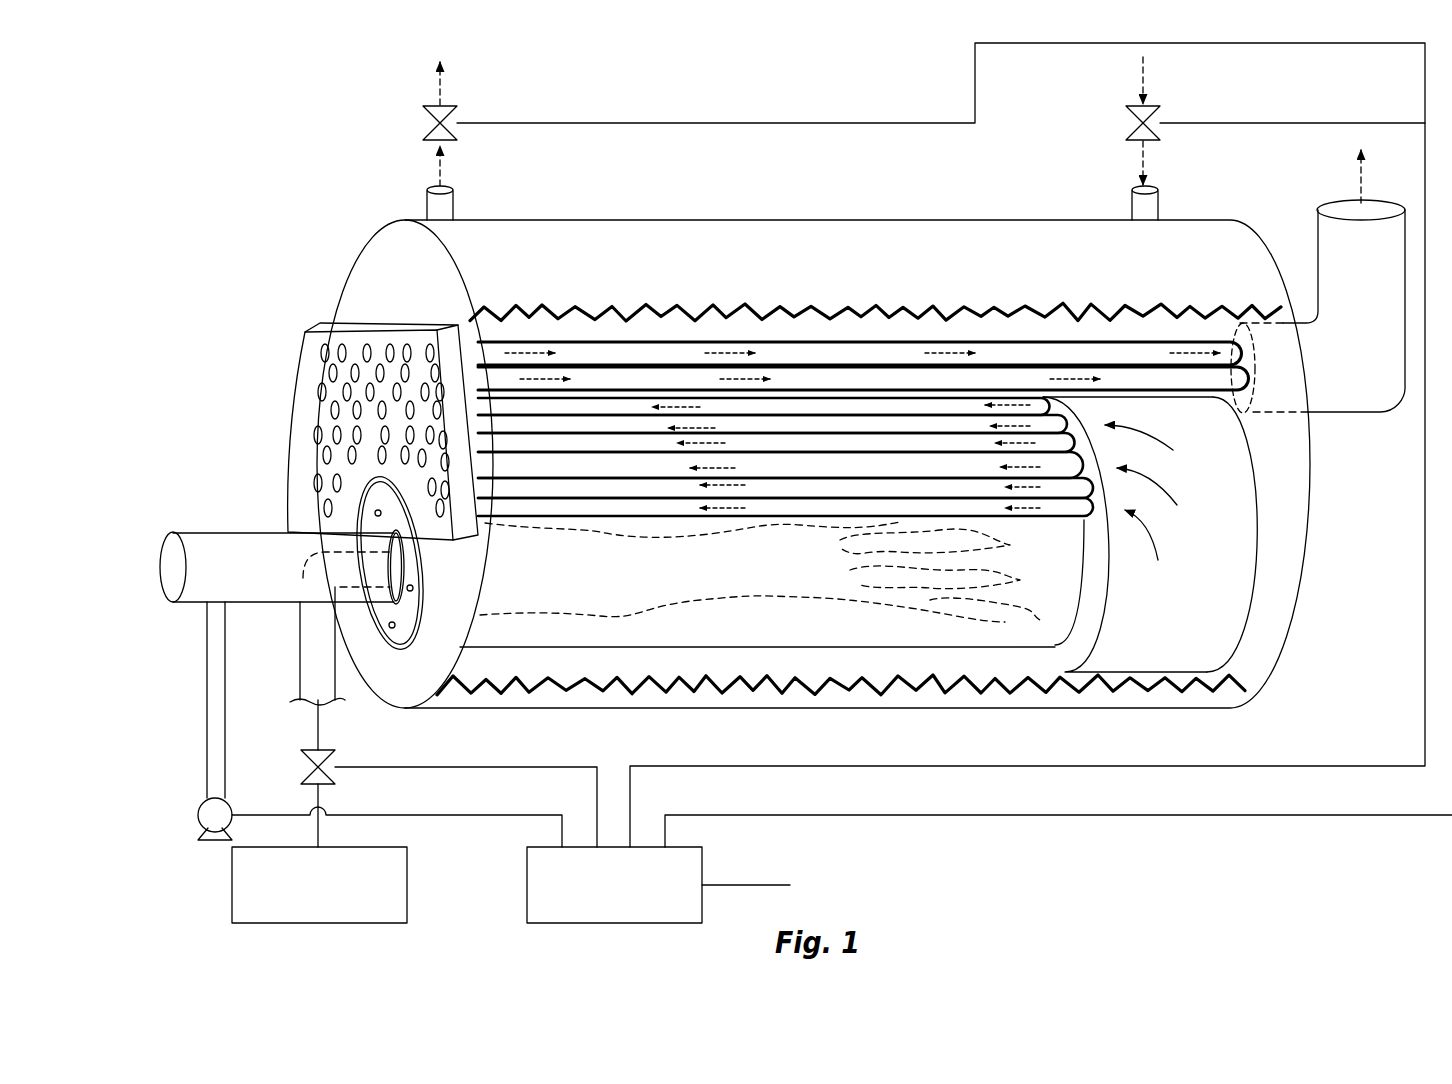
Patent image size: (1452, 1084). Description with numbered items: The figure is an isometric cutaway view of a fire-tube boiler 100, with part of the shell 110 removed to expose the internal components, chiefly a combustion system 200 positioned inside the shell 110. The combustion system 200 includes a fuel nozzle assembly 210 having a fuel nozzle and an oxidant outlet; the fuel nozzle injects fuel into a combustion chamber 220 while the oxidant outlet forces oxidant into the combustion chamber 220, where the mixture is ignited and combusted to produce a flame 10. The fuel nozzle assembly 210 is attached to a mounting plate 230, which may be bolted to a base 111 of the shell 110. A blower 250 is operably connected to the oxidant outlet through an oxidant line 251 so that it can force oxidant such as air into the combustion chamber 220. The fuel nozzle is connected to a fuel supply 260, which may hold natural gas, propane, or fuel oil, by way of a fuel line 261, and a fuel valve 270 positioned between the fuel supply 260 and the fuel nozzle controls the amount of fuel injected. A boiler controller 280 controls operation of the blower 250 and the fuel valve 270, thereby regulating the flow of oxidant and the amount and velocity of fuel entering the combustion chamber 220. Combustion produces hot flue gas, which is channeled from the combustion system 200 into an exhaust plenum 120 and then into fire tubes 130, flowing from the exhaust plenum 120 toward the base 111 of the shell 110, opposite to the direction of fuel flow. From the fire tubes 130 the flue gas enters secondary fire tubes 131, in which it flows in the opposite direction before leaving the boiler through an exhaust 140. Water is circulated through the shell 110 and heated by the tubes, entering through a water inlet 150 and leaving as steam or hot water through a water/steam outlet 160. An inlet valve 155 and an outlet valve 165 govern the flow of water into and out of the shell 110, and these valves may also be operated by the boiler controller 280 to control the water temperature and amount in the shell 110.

The fire-tube boiler 100 is at (320, 140).
The shell 110 is at (625, 219).
The base 111 is at (450, 627).
The exhaust plenum 120 is at (1238, 645).
The fire tubes 130 is at (835, 407).
The secondary fire tubes 131 is at (715, 355).
The exhaust 140 is at (1327, 233).
The water inlet 150 is at (1132, 205).
The inlet valve 155 is at (1130, 121).
The water/steam outlet 160 is at (428, 205).
The outlet valve 165 is at (428, 121).
The combustion system 200 is at (620, 650).
The fuel nozzle assembly 210 is at (354, 612).
The combustion chamber 220 is at (1033, 620).
The mounting plate 230 is at (402, 615).
The blower 250 is at (198, 812).
The oxidant line 251 is at (207, 628).
The fuel supply 260 is at (338, 897).
The fuel line 261 is at (297, 688).
The fuel valve 270 is at (310, 762).
The boiler controller 280 is at (633, 912).
The flame 10 is at (798, 600).